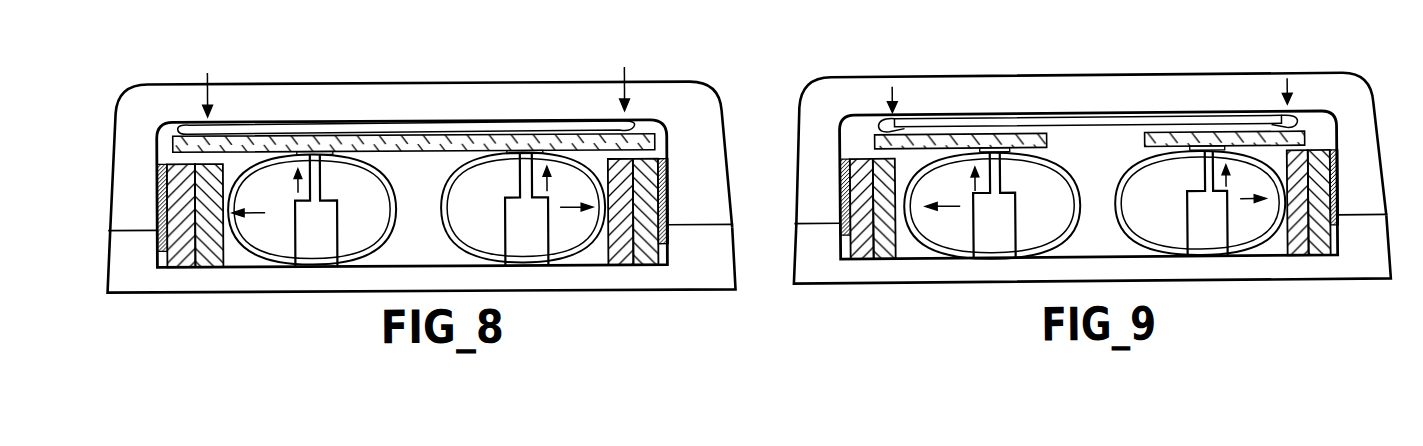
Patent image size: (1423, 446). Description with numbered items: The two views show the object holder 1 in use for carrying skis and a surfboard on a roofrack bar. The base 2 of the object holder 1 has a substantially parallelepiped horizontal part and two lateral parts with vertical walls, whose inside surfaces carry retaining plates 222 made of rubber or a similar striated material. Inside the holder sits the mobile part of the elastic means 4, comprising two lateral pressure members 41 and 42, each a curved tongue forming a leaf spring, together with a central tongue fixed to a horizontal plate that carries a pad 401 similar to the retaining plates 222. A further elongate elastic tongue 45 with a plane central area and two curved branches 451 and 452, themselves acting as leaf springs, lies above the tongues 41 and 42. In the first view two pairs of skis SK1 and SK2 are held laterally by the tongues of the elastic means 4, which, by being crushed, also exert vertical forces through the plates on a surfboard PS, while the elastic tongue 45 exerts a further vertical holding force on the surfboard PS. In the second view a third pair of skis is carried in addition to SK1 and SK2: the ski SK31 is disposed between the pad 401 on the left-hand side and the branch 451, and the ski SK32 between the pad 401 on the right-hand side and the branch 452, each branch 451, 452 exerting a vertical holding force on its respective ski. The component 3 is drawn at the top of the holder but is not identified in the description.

In FIG. 8, the object holder 1 is at (342, 58).
In FIG. 9, the object holder 1 is at (1062, 58).
In FIG. 8, the base 2 is at (248, 284).
In FIG. 9, the base 2 is at (920, 277).
In FIG. 8, the upper housing part 3 is at (420, 92).
In FIG. 9, the upper housing part 3 is at (1120, 78).
In FIG. 8, the elastic means 4 is at (447, 236).
In FIG. 9, the elastic means 4 is at (1123, 165).
In FIG. 8, the lateral pressure member 41 is at (256, 163).
In FIG. 9, the lateral pressure member 41 is at (950, 251).
In FIG. 8, the lateral pressure member 42 is at (357, 259).
In FIG. 9, the lateral pressure member 42 is at (1133, 233).
In FIG. 8, the elastic tongue 45 is at (525, 124).
In FIG. 9, the elastic tongue 45 is at (929, 112).
In FIG. 8, the retaining plates 222 is at (160, 186).
In FIG. 9, the retaining plates 222 is at (843, 166).
In FIG. 9, the pad 401 is at (1000, 148).
In FIG. 9, the curved branch 451 is at (892, 129).
In FIG. 9, the curved branch 452 is at (1289, 125).
In FIG. 8, the surfboard PS is at (340, 144).
In FIG. 8, the first pair of skis SK1 is at (210, 258).
In FIG. 9, the first pair of skis SK1 is at (890, 248).
In FIG. 8, the second pair of skis SK2 is at (648, 253).
In FIG. 9, the second pair of skis SK2 is at (1323, 250).
In FIG. 9, the ski of the third pair SK31 is at (962, 143).
In FIG. 9, the ski of the third pair SK32 is at (1303, 133).